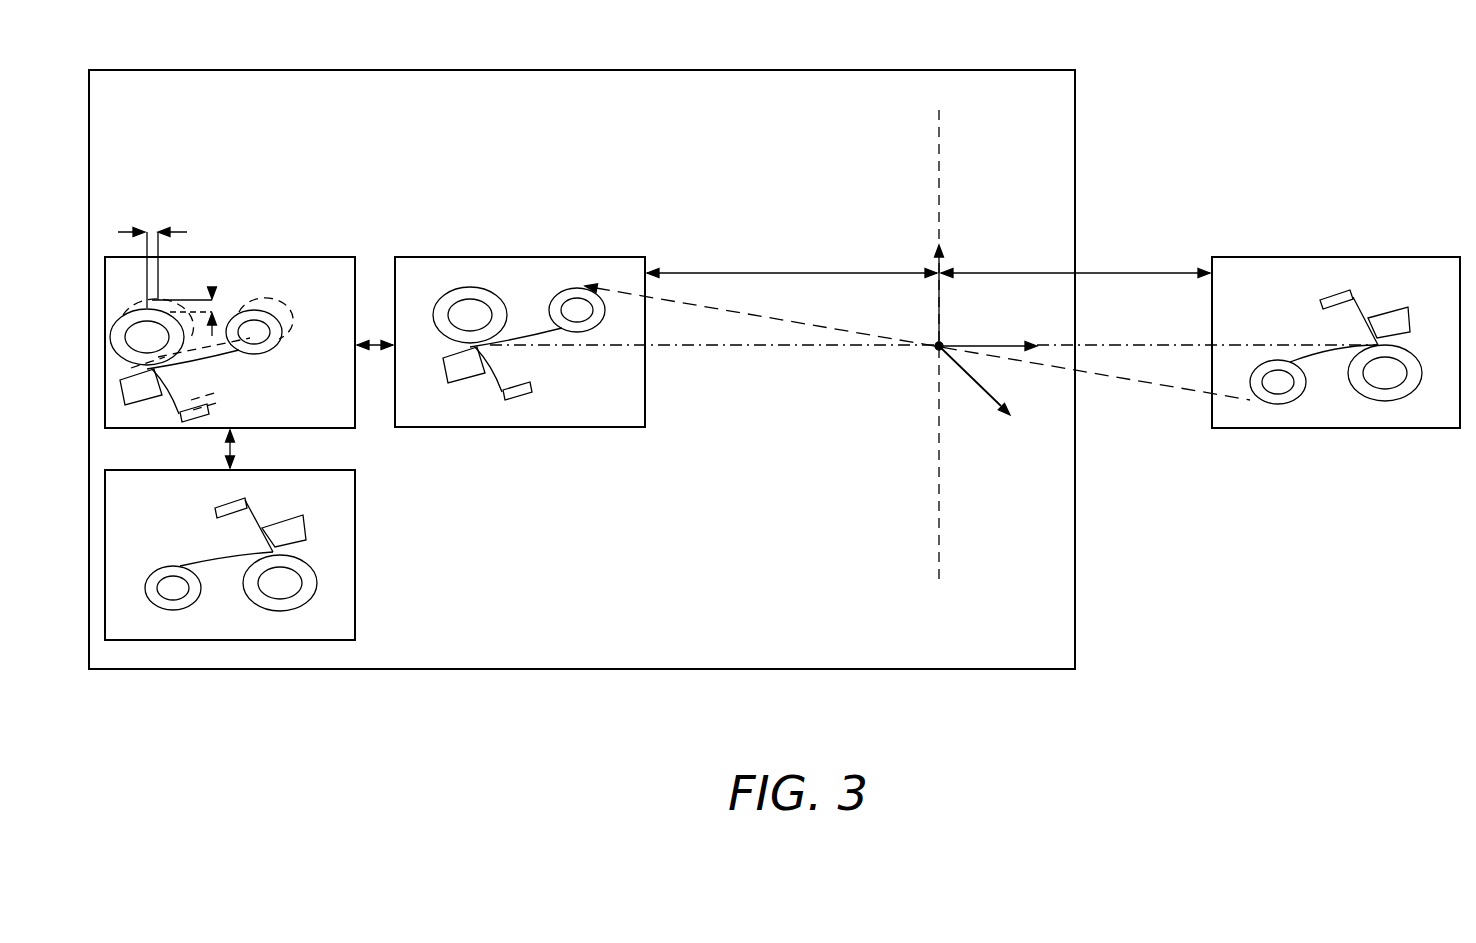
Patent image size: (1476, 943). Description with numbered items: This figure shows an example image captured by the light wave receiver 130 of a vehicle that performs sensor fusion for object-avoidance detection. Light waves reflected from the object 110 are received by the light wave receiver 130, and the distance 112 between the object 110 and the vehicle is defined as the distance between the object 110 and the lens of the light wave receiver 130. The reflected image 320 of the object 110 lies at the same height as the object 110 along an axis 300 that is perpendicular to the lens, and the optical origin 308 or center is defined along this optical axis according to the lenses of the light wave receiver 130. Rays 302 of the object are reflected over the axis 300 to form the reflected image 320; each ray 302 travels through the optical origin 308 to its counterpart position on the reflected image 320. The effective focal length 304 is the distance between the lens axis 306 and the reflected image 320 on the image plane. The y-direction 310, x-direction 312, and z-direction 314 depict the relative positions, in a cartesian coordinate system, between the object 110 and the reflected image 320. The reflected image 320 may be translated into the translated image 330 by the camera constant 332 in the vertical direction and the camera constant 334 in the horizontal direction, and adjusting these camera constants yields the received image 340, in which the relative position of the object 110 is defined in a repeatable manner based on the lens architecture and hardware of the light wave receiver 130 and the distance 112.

The object 110 is at (1333, 276).
The distance 112 is at (1092, 273).
The light wave receiver 130 is at (512, 70).
The axis 300 is at (752, 350).
The ray 302 is at (757, 318).
The effective focal length 304 is at (790, 273).
The lens axis 306 is at (940, 170).
The optical origin 308 is at (937, 343).
The y-direction 310 is at (940, 327).
The x-direction 312 is at (967, 374).
The z-direction 314 is at (967, 342).
The reflected image 320 is at (563, 399).
The translated image 330 is at (269, 390).
The camera constant 332 is at (212, 287).
The camera constant 334 is at (182, 230).
The received image 340 is at (185, 492).